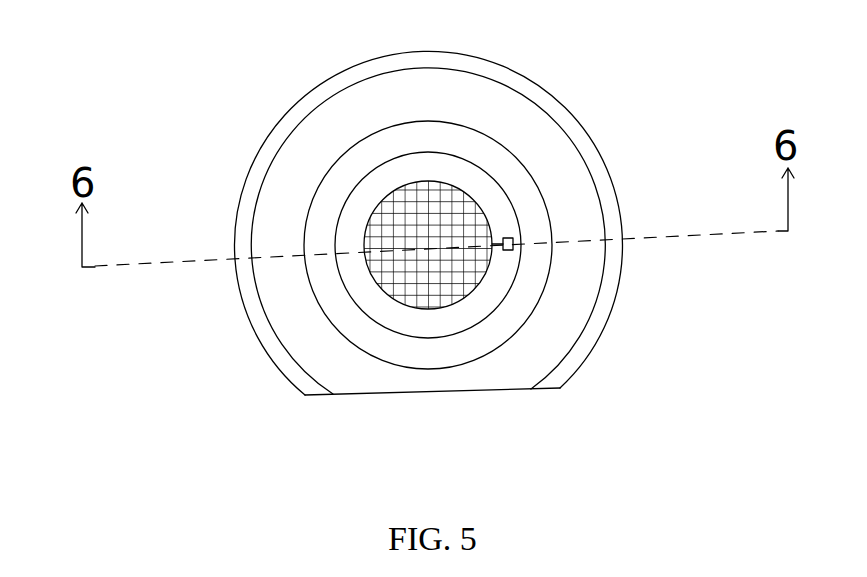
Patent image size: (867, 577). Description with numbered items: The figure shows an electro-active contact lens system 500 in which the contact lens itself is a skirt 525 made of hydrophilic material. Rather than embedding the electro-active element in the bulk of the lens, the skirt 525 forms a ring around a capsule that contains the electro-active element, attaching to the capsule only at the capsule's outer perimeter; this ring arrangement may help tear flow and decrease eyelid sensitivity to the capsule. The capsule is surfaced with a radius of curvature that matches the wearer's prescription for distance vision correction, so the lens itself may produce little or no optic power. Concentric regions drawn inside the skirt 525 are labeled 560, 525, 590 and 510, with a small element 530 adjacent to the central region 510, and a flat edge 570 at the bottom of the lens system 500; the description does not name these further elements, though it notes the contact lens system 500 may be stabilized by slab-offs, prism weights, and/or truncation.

The contact lens system 500 is at (611, 77).
The mesh core / filament structure 510 is at (385, 293).
The skirt 525 is at (285, 205).
The connector element 530 is at (515, 241).
The outer ring / housing 560 is at (440, 62).
The flat base edge 570 is at (517, 388).
The inner ring layer 590 is at (533, 282).